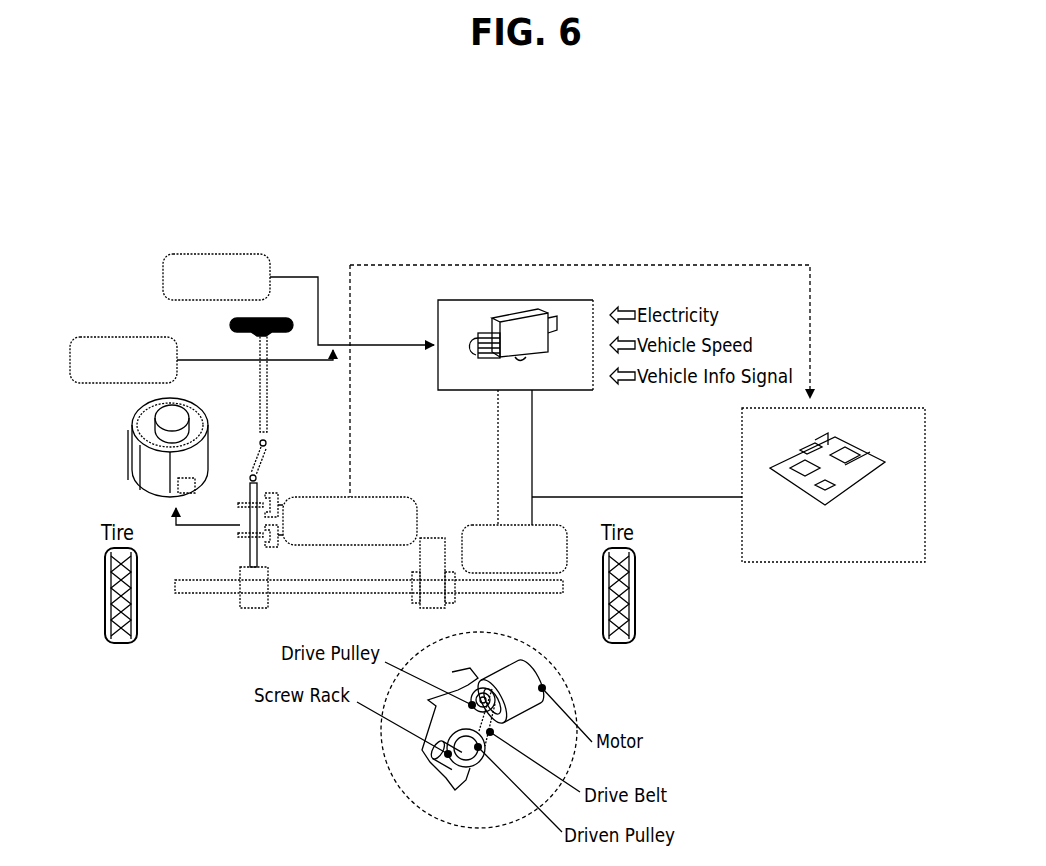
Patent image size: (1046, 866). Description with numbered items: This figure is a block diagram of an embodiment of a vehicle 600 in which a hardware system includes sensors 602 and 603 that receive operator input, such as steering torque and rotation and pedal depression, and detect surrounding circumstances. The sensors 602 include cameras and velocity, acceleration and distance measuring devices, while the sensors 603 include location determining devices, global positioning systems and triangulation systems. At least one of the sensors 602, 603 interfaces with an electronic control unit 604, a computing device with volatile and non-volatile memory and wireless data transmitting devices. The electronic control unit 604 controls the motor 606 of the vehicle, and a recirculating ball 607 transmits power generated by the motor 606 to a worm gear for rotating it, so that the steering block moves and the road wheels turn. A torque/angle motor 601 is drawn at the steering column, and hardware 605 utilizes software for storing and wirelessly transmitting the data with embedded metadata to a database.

The steer-by-wire system 600 is at (652, 227).
The torque/angle motor 601 is at (363, 498).
The sensors 602 is at (229, 254).
The sensors 603 is at (133, 337).
The electronic control unit 604 is at (545, 300).
The hardware 605 is at (880, 408).
The motor 606 is at (537, 525).
The recirculating ball 607 is at (433, 538).